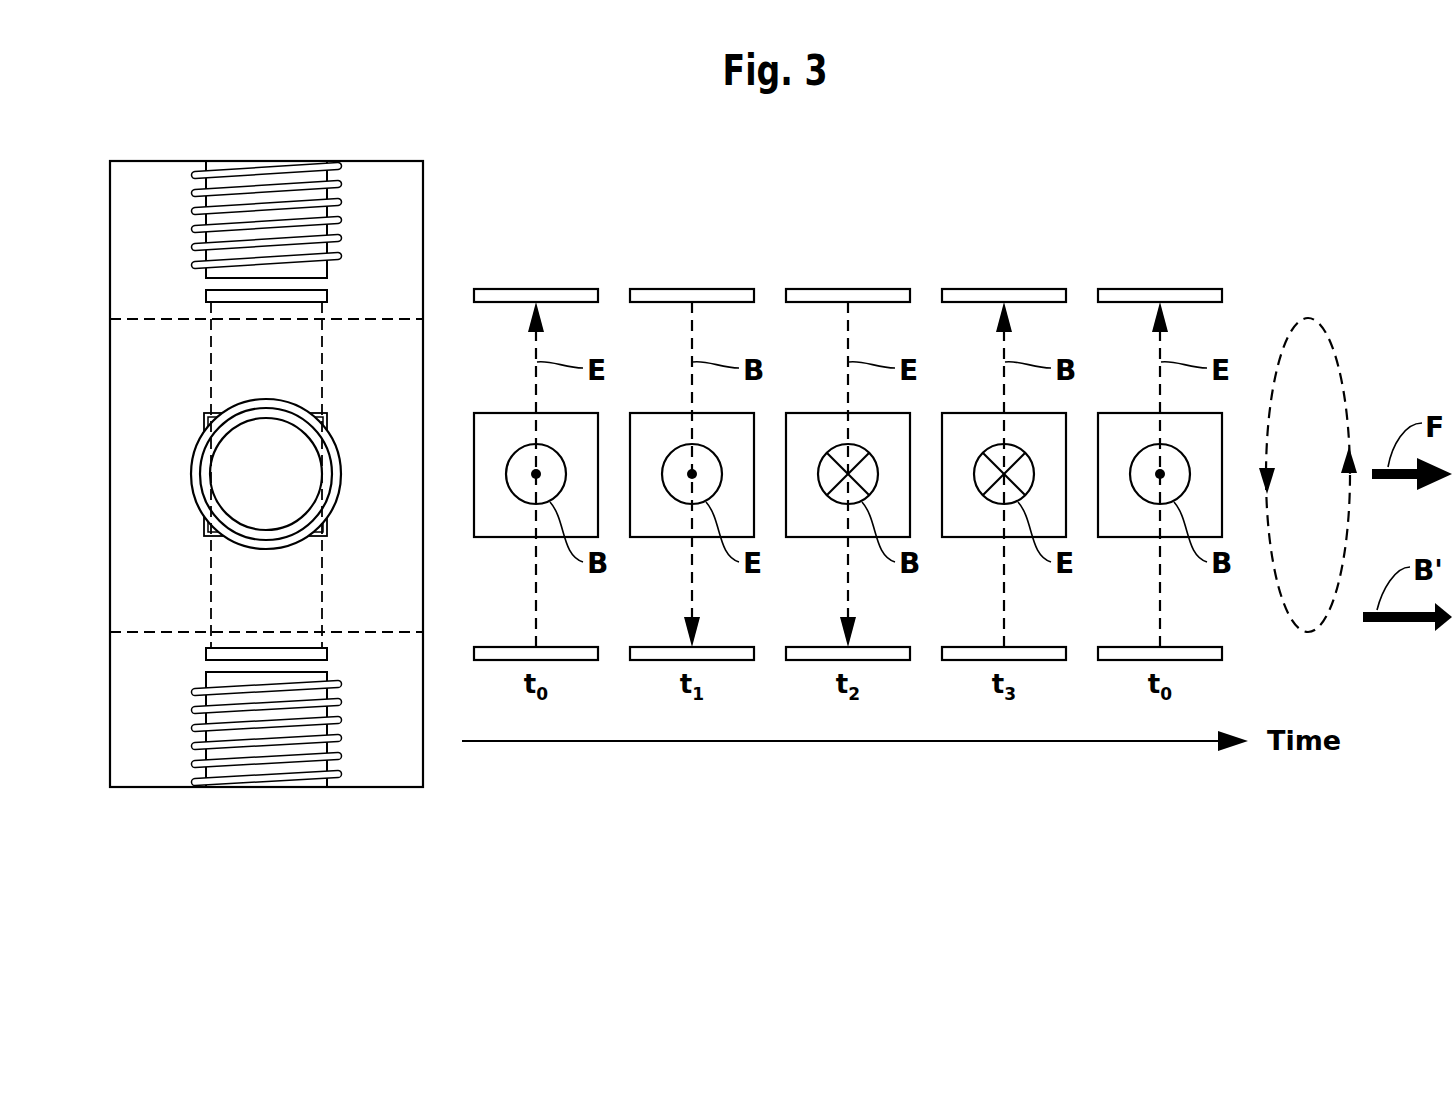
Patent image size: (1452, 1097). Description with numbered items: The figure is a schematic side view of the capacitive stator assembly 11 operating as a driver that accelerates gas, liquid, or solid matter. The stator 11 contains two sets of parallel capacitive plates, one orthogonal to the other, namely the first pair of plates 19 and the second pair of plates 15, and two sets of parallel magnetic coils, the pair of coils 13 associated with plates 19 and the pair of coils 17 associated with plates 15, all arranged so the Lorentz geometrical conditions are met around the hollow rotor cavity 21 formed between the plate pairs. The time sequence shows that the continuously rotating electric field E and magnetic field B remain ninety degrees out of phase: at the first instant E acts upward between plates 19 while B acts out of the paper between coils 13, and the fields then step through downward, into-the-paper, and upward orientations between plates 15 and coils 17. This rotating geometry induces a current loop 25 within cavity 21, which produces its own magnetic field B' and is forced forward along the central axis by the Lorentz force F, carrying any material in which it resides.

The capacitive stator assembly 11 is at (462, 138).
The first pair of magnetic coils 13 is at (333, 438).
The second pair of capacitive plates 15 is at (327, 528).
The second pair of magnetic coils 17 is at (342, 202).
The first pair of capacitive plates 19 is at (330, 293).
The rotor cavity 21 is at (248, 605).
The induced current loop 25 is at (1332, 342).